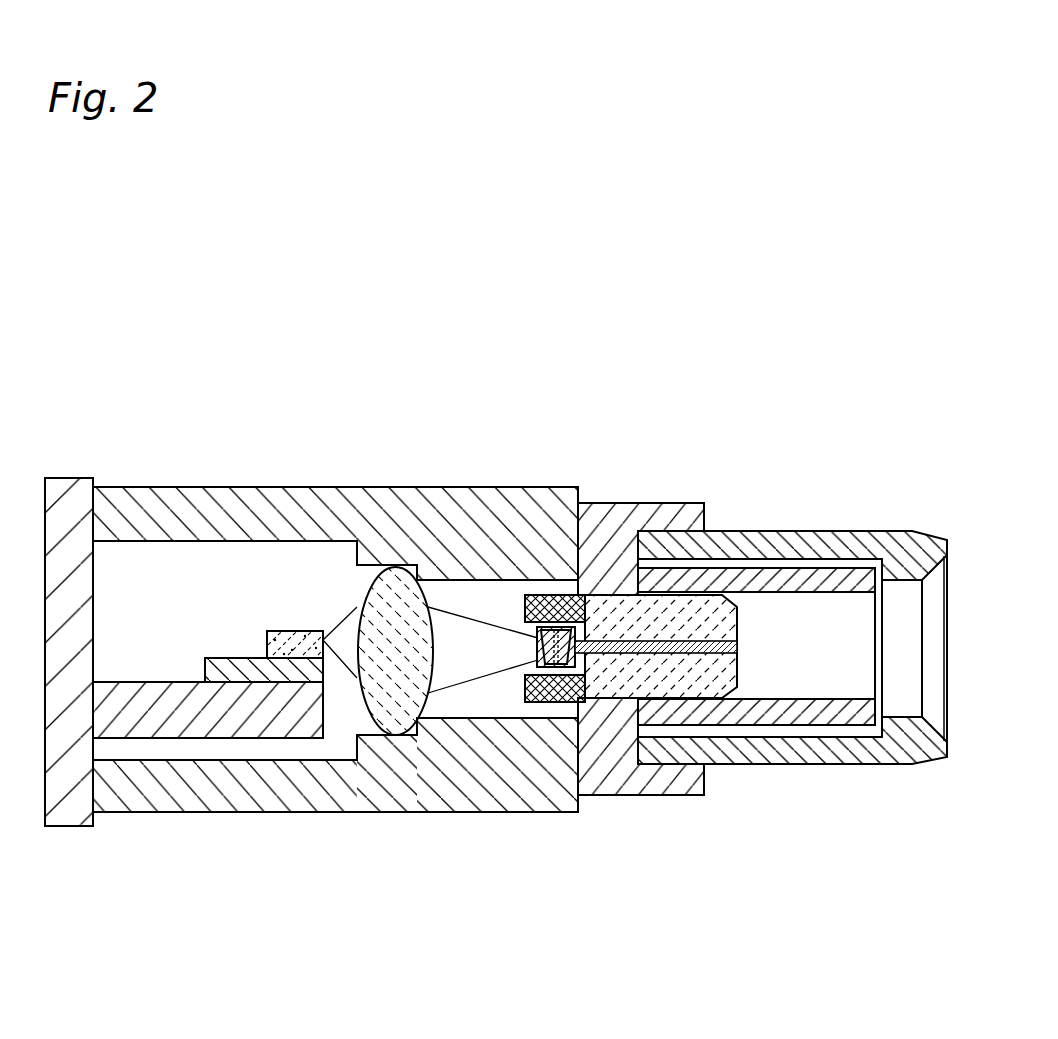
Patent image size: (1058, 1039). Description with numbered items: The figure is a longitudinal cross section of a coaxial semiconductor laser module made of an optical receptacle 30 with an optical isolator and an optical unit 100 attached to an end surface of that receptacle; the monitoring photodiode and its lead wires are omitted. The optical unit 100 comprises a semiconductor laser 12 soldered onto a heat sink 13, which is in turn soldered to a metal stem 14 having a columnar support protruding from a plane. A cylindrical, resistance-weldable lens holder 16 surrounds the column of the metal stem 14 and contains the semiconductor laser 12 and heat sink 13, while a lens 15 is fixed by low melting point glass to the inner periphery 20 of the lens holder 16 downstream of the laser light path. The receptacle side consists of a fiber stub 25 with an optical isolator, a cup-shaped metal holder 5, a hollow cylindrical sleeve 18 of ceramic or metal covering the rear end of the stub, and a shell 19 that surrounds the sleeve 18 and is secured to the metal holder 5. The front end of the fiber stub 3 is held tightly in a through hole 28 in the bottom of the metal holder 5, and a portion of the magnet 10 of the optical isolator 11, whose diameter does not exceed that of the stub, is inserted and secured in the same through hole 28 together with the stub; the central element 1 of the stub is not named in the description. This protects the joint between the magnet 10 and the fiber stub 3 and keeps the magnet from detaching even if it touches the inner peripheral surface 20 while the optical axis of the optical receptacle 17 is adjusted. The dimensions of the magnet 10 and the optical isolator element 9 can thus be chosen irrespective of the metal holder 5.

The optical fiber 1 is at (672, 647).
The fiber stub 3 is at (617, 603).
The metal holder 5 is at (683, 503).
The optical isolator element 9 is at (520, 597).
The magnet 10 is at (563, 597).
The optical isolator 11 is at (557, 327).
The semiconductor laser 12 is at (288, 630).
The heat sink 13 is at (212, 655).
The metal stem 14 is at (73, 485).
The lens 15 is at (383, 585).
The lens holder 16 is at (390, 487).
The optical receptacle 17 is at (582, 265).
The sleeve 18 is at (758, 568).
The shell 19 is at (843, 530).
The inner periphery of the lens holder 20 is at (510, 718).
The fiber stub with an optical isolator 25 is at (428, 265).
The through hole 28 is at (615, 690).
The optical receptacle with an optical isolator 30 is at (477, 190).
The optical unit 100 is at (552, 928).